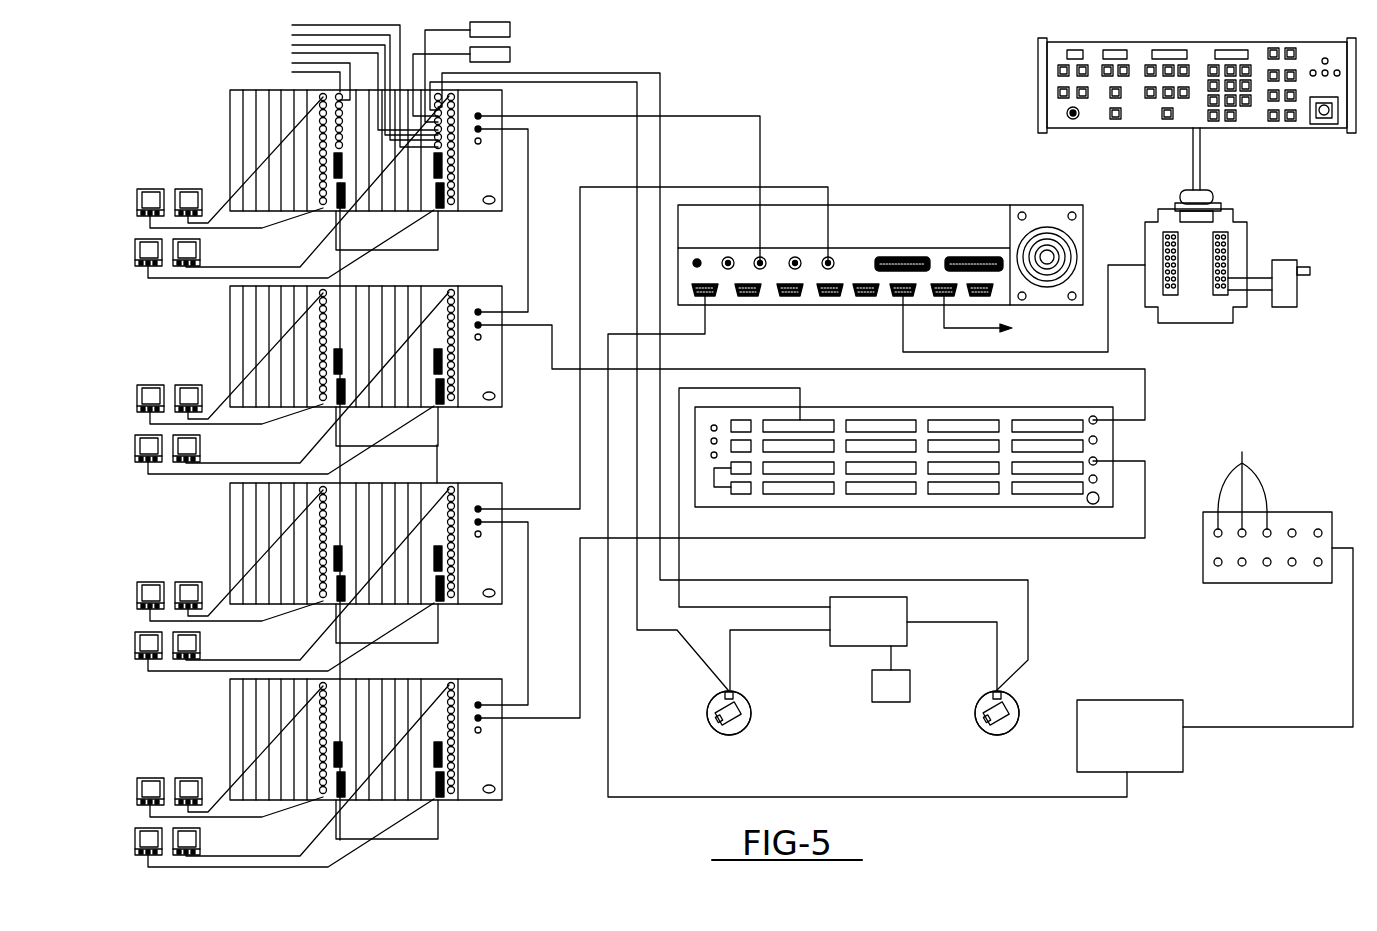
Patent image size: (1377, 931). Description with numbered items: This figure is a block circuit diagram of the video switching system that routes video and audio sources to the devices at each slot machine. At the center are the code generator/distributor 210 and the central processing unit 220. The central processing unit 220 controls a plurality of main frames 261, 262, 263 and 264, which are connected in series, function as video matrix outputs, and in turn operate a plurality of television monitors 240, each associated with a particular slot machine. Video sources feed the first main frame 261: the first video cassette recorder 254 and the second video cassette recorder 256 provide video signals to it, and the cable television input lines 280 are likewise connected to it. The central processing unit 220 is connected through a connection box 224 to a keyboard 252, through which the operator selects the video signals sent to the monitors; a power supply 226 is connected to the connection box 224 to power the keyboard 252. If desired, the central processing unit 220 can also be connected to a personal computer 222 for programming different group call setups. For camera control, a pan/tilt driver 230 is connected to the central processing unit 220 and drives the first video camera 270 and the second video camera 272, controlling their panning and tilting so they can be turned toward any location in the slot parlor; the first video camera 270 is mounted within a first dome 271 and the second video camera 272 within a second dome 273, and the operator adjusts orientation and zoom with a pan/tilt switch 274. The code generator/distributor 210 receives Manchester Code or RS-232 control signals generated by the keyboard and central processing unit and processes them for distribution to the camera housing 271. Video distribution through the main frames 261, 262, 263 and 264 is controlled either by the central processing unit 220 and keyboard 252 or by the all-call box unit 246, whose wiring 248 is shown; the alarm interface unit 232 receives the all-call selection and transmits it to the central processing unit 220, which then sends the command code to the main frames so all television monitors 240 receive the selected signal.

The code generator/distributor 210 is at (815, 418).
The central processing unit 220 is at (990, 222).
The personal computer 222 is at (998, 317).
The connection box 224 is at (1202, 310).
The power supply 226 is at (1285, 287).
The pan/tilt driver 230 is at (848, 633).
The alarm interface unit 232 is at (1165, 748).
The television monitors 240 is at (152, 251).
The all-call box unit 246 is at (1254, 573).
The terminal wiring 248 is at (1242, 477).
The keyboard 252 is at (1315, 50).
The first video cassette recorder 254 is at (512, 28).
The second video cassette recorder 256 is at (512, 55).
The main frame 261 is at (482, 173).
The main frame 262 is at (485, 365).
The main frame 263 is at (478, 572).
The main frame 264 is at (487, 762).
The first video camera 270 is at (741, 716).
The first dome 271 is at (730, 735).
The second video camera 272 is at (1010, 712).
The second dome 273 is at (988, 735).
The pan/tilt switch 274 is at (903, 695).
The cable television input lines 280 is at (310, 20).